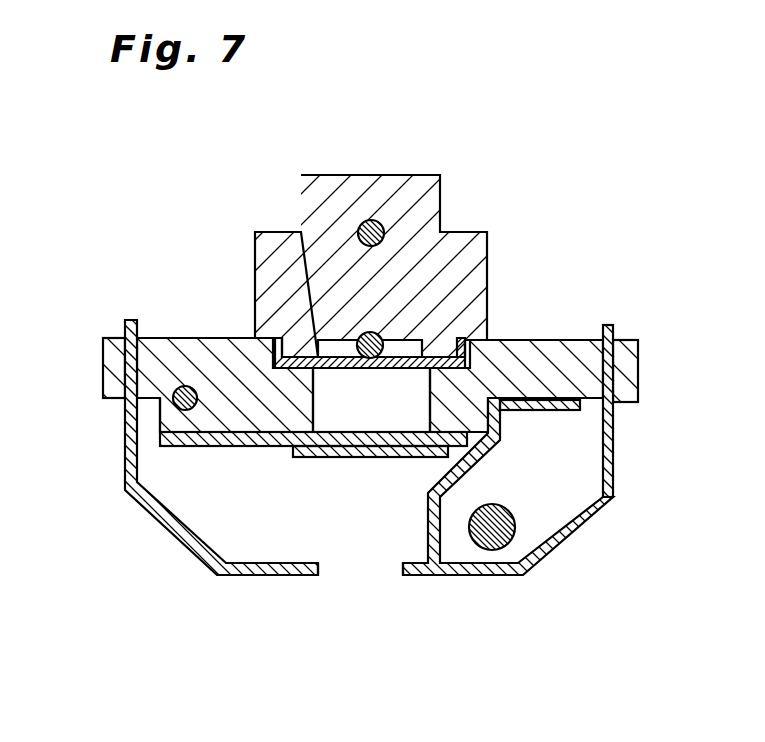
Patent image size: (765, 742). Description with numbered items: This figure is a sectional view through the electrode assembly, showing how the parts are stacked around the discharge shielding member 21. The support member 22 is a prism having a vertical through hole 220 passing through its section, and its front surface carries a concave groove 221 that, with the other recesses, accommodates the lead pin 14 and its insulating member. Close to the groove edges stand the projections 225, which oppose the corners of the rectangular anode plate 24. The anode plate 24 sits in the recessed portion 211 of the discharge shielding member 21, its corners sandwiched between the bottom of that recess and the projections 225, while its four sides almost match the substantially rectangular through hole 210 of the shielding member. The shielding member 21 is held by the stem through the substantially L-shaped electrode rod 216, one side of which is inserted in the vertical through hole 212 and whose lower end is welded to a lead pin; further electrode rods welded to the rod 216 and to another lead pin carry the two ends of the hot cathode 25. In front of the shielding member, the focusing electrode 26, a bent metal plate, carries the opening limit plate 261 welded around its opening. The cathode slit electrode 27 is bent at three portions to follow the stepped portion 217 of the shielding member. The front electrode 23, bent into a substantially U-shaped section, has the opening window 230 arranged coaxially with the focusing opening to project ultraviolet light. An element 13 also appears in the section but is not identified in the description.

The support member 22 is at (405, 175).
The upper body portion 13 is at (384, 225).
The vertical through hole 220 is at (357, 232).
The lead pin 14 is at (358, 340).
The projections 225 is at (275, 345).
The concave groove 221 is at (407, 303).
The anode plate 24 is at (383, 340).
The discharge shielding member 21 is at (610, 327).
The recessed portion 211 is at (250, 338).
The electrode rod 216 is at (172, 403).
The vertical through hole 212 is at (160, 430).
The focusing electrode 26 is at (222, 448).
The opening limit plate 261 is at (308, 457).
The front electrode 23 is at (170, 532).
The opening window 230 is at (355, 572).
The through hole 210 is at (430, 402).
The stepped portion 217 is at (503, 415).
The cathode slit electrode 27 is at (600, 407).
The hot cathode 25 is at (517, 537).